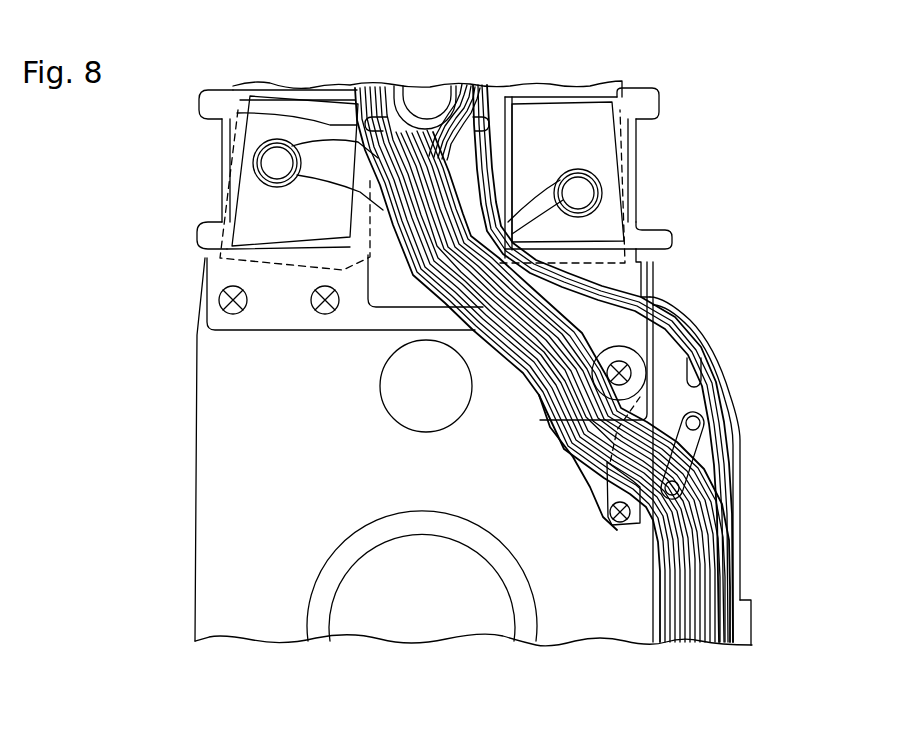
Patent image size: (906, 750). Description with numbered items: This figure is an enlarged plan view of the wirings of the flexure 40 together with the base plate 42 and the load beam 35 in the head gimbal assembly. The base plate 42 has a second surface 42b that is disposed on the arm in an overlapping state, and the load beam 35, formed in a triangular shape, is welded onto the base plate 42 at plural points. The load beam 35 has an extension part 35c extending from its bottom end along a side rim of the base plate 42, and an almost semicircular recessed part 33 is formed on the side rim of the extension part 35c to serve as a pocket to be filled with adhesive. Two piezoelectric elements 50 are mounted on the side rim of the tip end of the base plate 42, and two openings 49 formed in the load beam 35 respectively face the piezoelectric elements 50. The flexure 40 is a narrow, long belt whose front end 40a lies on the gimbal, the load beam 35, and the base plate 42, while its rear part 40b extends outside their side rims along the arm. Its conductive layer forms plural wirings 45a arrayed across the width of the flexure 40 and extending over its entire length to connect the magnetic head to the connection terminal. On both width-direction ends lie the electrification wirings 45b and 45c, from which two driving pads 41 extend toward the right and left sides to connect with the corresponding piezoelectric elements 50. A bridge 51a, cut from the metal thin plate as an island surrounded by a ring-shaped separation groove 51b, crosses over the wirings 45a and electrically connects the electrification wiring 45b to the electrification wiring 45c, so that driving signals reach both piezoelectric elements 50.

The recessed part 33 is at (630, 490).
The load beam 35 is at (343, 317).
The extension part 35c is at (580, 462).
The flexure 40 is at (743, 482).
The front end 40a is at (440, 277).
The rear part 40b is at (742, 587).
The driving pad 41 is at (268, 160).
The base plate 42 is at (218, 517).
The second surface 42b is at (217, 440).
The wirings 45a is at (605, 284).
The electrification wiring 45b is at (535, 380).
The electrification wiring 45c is at (685, 332).
The openings 49 is at (232, 105).
The piezoelectric elements 50 is at (245, 188).
The bridge 51a is at (700, 445).
The separation groove 51b is at (700, 423).